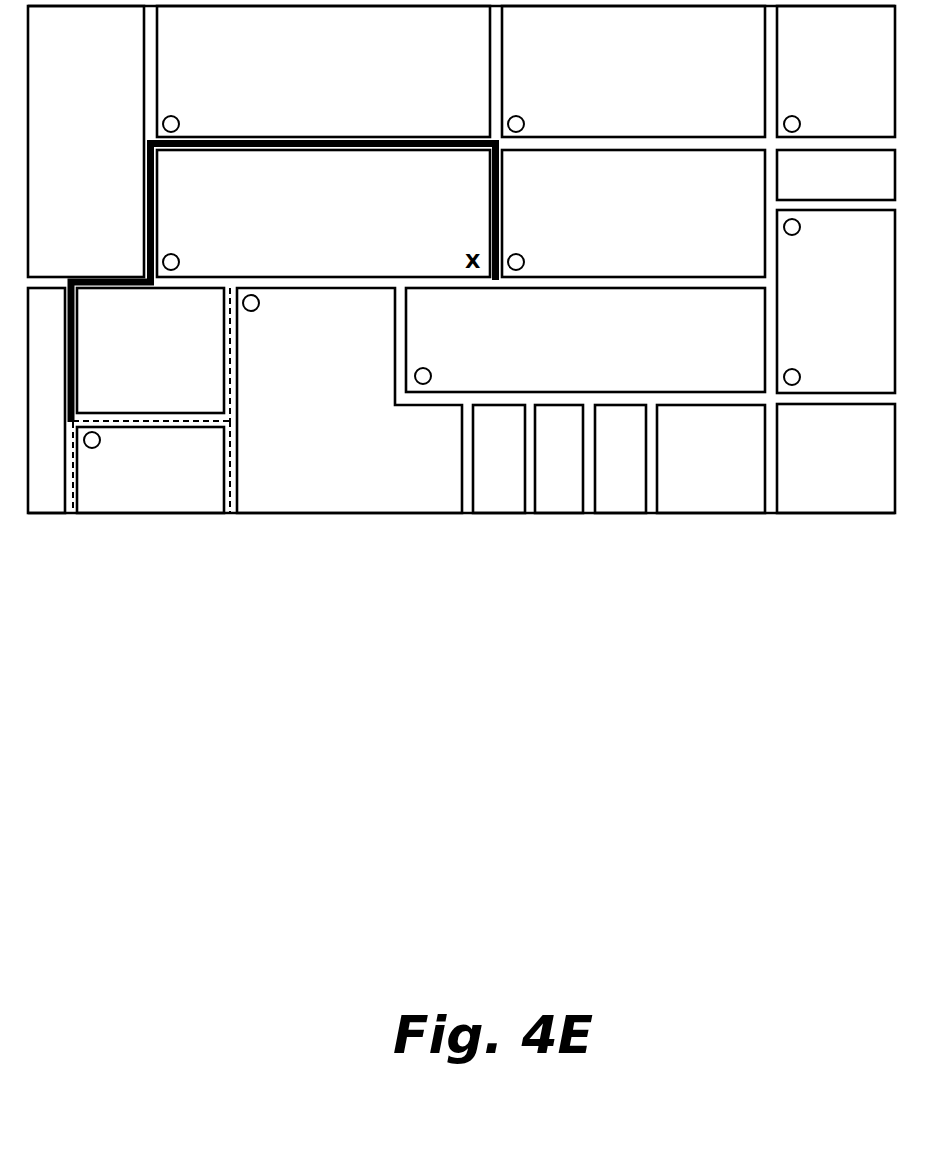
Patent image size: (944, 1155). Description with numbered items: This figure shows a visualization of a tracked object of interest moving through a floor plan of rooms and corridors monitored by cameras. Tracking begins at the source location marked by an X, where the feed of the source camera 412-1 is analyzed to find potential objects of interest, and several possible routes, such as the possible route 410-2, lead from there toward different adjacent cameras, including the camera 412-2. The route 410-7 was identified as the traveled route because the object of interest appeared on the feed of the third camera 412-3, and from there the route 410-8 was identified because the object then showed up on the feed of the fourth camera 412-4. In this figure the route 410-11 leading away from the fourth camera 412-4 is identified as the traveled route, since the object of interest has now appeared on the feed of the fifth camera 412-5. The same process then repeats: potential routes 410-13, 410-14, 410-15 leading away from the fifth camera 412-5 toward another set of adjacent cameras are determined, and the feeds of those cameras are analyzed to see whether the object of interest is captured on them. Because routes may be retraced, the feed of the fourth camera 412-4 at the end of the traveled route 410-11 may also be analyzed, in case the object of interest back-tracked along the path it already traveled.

The route 410-7 is at (305, 138).
The route 410-8 is at (148, 230).
The possible route 410-2 is at (493, 207).
The route 410-11 is at (78, 357).
The potential route 410-13 is at (235, 395).
The potential route 410-14 is at (235, 475).
The potential route 410-15 is at (73, 483).
The source camera 412-1 is at (523, 261).
The camera 412-2 is at (523, 123).
The third camera 412-3 is at (178, 130).
The fourth camera 412-4 is at (178, 267).
The fifth camera 412-5 is at (99, 444).